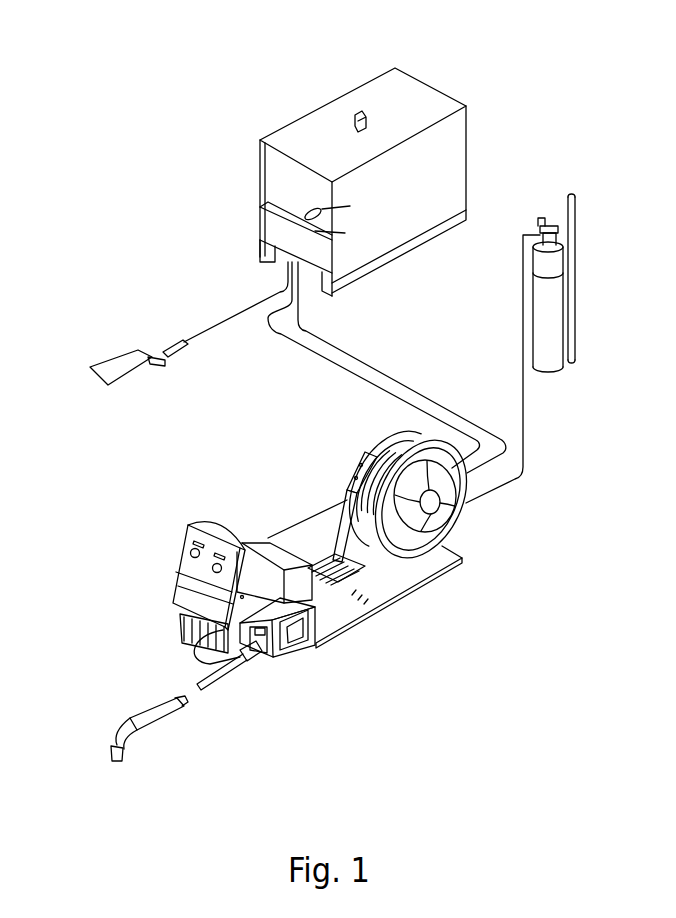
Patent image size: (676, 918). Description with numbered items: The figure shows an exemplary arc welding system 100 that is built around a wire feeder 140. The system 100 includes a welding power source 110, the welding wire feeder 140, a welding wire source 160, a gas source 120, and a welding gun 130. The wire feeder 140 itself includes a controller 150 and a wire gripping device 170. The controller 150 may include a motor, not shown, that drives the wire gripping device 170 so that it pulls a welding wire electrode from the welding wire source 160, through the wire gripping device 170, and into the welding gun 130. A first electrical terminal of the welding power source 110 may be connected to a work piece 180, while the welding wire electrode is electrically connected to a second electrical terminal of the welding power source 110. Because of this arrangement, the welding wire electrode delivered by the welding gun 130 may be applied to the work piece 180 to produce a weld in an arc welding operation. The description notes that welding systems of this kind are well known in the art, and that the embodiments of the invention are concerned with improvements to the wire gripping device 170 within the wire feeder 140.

The arc welding system 100 is at (147, 98).
The welding power source 110 is at (425, 82).
The gas source 120 is at (588, 186).
The welding gun 130 is at (165, 722).
The wire feeder 140 is at (260, 574).
The controller 150 is at (198, 524).
The welding wire source 160 is at (416, 420).
The wire gripping device 170 is at (302, 645).
The work piece 180 is at (100, 365).